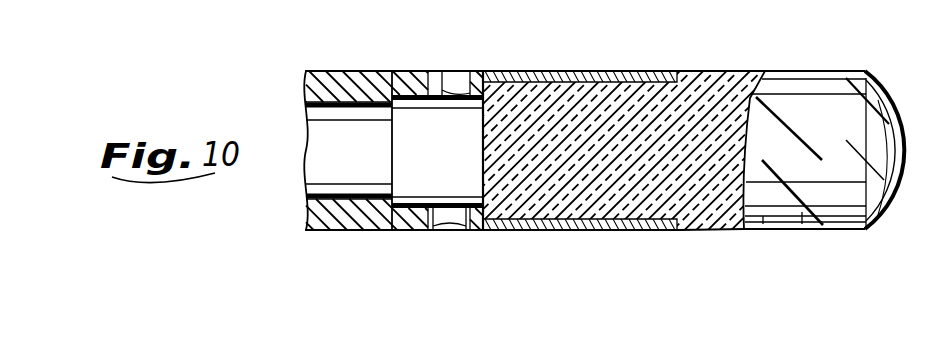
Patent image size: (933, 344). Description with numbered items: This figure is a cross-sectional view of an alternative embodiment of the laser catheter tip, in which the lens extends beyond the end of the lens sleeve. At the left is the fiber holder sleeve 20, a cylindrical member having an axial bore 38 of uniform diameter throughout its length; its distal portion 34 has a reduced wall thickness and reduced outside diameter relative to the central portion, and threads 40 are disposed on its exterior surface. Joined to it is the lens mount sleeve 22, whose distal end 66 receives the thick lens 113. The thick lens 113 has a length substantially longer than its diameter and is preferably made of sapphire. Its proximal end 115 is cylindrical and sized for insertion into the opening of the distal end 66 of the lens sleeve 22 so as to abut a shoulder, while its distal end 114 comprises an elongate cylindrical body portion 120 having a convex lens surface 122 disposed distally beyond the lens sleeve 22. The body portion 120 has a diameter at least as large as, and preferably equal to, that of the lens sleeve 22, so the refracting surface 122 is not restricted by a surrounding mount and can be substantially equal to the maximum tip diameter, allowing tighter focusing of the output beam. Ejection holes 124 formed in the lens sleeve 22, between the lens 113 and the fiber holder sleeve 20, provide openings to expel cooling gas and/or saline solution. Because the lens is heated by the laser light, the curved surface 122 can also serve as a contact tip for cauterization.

The fiber holder sleeve 20 is at (396, 165).
The lens mount sleeve 22 is at (565, 230).
The distal portion 34 is at (363, 207).
The axial bore 38 is at (316, 194).
The threads 40 is at (338, 86).
The distal end 66 is at (628, 71).
The thick lens 113 is at (805, 69).
The distal end 114 is at (758, 230).
The proximal end 115 is at (538, 100).
The body portion 120 is at (800, 230).
The convex lens surface 122 is at (897, 186).
The ejection holes 124 is at (453, 84).